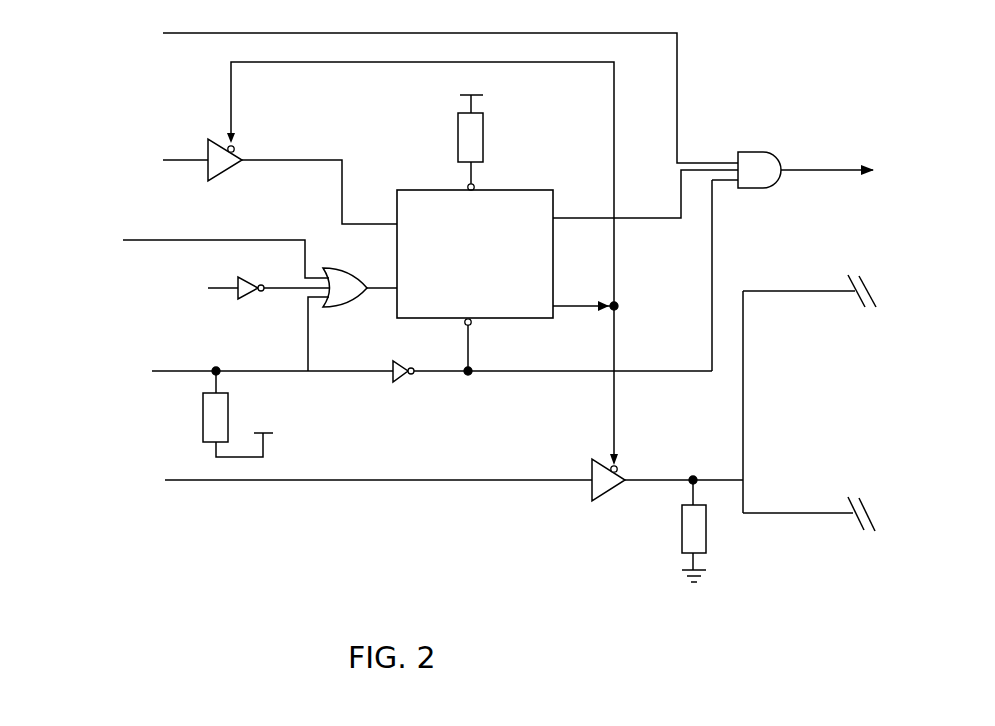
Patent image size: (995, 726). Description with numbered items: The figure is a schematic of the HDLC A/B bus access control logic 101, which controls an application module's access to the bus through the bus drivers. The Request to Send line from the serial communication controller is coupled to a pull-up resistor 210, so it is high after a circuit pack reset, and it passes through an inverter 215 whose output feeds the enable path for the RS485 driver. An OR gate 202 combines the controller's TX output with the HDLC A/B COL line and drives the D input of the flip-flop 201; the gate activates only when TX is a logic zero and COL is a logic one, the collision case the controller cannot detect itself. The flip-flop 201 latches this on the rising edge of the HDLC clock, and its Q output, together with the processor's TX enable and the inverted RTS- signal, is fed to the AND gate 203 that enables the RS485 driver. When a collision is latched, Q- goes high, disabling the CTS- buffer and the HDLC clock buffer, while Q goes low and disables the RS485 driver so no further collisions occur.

The HDLC A/B bus access control logic 101 is at (438, 580).
The flip-flop 201 is at (517, 190).
The OR gate 202 is at (363, 272).
The AND gate 203 is at (757, 152).
The pull-up resistor 210 is at (204, 425).
The inverter 215 is at (390, 373).